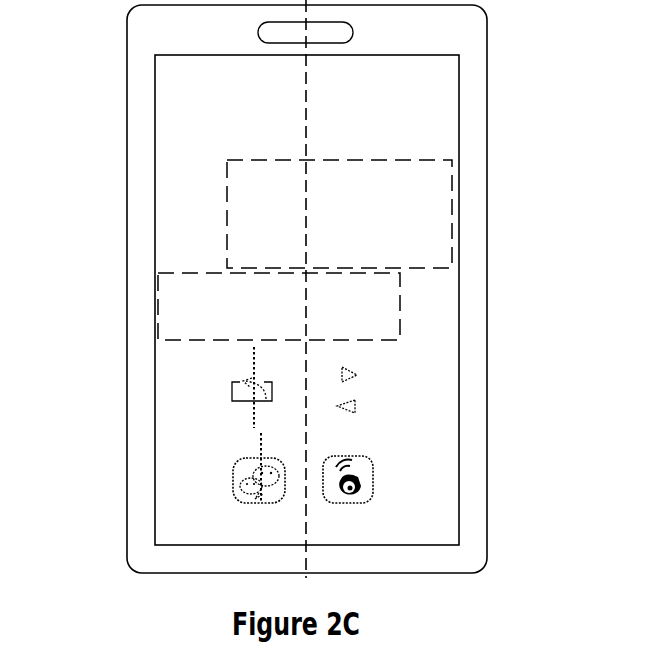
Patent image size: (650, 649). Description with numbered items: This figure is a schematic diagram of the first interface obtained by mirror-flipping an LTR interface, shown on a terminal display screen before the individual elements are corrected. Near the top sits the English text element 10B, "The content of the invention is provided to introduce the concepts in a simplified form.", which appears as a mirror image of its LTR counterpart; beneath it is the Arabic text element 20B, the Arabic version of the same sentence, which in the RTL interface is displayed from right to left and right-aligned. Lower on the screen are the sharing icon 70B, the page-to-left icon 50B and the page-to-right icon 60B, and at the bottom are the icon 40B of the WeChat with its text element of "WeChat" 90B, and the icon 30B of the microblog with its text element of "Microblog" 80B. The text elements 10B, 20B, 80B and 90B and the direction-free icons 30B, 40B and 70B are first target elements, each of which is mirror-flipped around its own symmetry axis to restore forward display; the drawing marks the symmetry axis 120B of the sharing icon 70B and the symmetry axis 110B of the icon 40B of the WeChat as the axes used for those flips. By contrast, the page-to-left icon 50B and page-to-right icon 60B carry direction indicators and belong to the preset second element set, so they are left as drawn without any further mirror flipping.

The text element 10B is at (210, 197).
The text element 20B is at (167, 285).
The icon of the microblog 30B is at (383, 479).
The icon of the WeChat 40B is at (215, 482).
The page-to-left icon 50B is at (368, 372).
The page-to-right icon 60B is at (362, 405).
The sharing icon 70B is at (223, 383).
The text element of "Microblog" 80B is at (418, 513).
The text element of "WeChat" 90B is at (210, 523).
The symmetry axis of the icon of the WeChat 110B is at (258, 449).
The symmetry axis of the sharing icon 120B is at (235, 408).